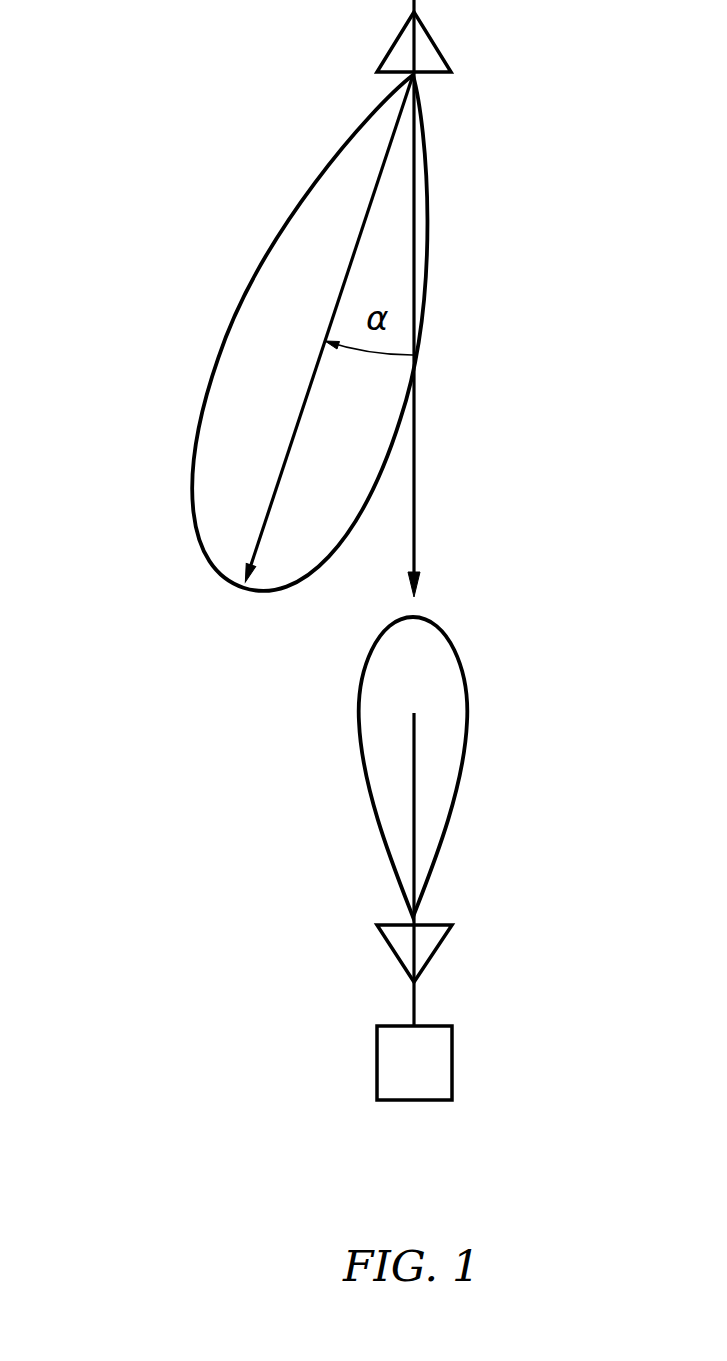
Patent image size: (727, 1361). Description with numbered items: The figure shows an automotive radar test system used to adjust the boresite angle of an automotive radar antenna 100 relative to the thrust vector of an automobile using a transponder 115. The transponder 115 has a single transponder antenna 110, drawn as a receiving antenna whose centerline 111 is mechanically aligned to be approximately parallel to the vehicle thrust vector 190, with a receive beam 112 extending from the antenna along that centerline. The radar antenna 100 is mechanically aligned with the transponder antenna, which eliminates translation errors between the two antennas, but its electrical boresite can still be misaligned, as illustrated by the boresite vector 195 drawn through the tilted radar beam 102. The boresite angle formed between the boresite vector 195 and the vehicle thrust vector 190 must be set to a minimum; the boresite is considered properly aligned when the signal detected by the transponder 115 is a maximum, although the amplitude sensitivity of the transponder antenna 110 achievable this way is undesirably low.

The radar antenna 100 is at (434, 40).
The transmit beam lobe (antenna pattern) 102 is at (193, 527).
The boresite vector 195 is at (361, 231).
The vehicle thrust vector 190 is at (417, 475).
The receive antenna beam lobe 112 is at (467, 687).
The centerline 111 is at (416, 788).
The transponder antenna 110 is at (442, 942).
The transponder 115 is at (452, 1054).